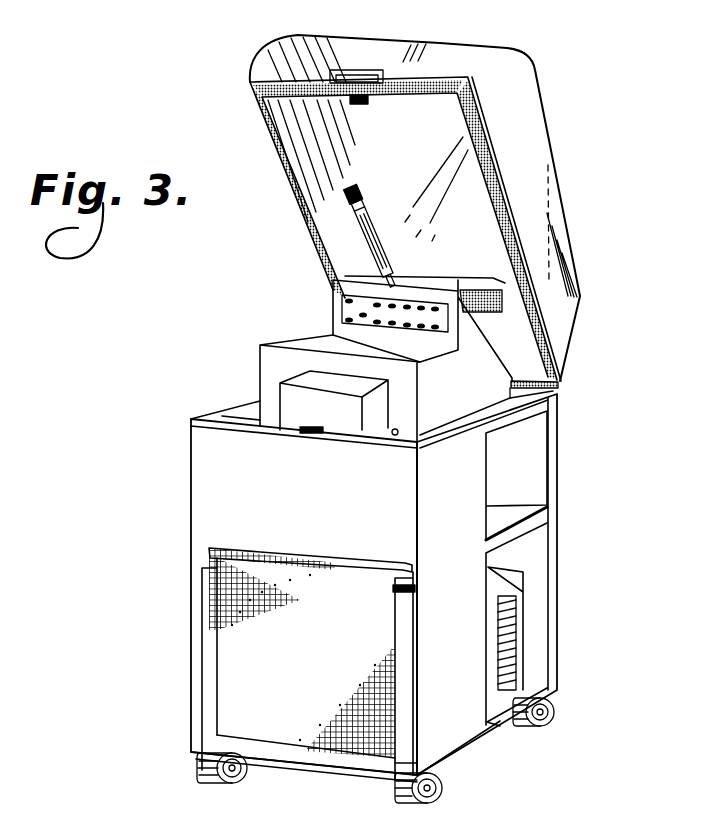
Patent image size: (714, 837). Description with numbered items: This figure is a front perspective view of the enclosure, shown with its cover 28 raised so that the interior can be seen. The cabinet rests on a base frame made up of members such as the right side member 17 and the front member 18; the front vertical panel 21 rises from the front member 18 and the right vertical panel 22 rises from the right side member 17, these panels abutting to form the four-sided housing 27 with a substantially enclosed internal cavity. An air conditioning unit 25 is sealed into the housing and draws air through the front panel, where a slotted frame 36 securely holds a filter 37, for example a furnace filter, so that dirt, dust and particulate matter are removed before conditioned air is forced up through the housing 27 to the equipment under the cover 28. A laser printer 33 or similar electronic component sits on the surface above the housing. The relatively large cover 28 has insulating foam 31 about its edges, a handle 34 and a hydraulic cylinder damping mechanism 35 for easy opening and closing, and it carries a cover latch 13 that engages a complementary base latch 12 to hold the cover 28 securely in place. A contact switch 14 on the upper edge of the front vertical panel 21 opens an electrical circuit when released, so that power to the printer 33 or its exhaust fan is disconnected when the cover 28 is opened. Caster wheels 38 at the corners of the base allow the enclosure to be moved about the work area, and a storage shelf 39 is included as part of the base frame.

The base latch 12 is at (308, 433).
The cover latch 13 is at (359, 107).
The contact switch 14 is at (395, 436).
The right side member 17 is at (499, 727).
The front member 18 is at (334, 770).
The front vertical panel 21 is at (212, 524).
The right vertical panel 22 is at (448, 745).
The air conditioning unit 25 is at (520, 642).
The housing 27 is at (158, 489).
The cover 28 is at (525, 148).
The insulating foam 31 is at (253, 85).
The laser printer 33 is at (493, 383).
The handle 34 is at (356, 72).
The hydraulic cylinder damping mechanism 35 is at (356, 212).
The slotted frame 36 is at (212, 698).
The filter 37 is at (238, 626).
The caster wheels 38 is at (556, 721).
The storage shelf 39 is at (533, 523).